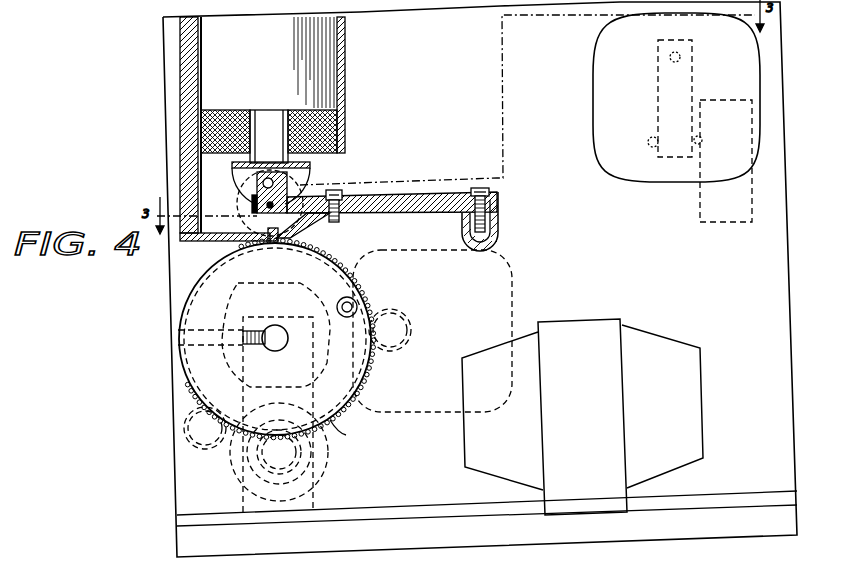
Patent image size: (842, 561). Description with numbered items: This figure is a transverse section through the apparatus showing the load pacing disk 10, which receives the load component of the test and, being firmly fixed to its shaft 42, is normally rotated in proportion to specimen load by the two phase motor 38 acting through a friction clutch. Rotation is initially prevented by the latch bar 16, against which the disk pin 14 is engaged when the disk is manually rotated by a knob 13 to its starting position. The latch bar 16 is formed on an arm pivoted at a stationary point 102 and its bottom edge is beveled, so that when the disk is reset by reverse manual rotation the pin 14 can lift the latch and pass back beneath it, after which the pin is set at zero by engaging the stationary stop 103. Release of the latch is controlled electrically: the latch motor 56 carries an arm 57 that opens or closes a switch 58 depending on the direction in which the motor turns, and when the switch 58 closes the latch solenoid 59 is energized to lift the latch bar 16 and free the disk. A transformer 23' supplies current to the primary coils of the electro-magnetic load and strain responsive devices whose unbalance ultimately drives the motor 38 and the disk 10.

The latch solenoid 59 is at (182, 140).
The stationary stop 103 is at (246, 229).
The latch bar 16 is at (318, 230).
The disk pin 14 is at (279, 242).
The stationary pivot point 102 is at (498, 229).
The load pacing disk 10 is at (200, 378).
The knob 13 is at (238, 302).
The shaft 42 is at (276, 348).
The two phase motor 38 is at (510, 300).
The transformer 23' is at (582, 412).
The two phase motor 56 is at (660, 183).
The arm 57 is at (658, 90).
The switch 58 is at (724, 100).